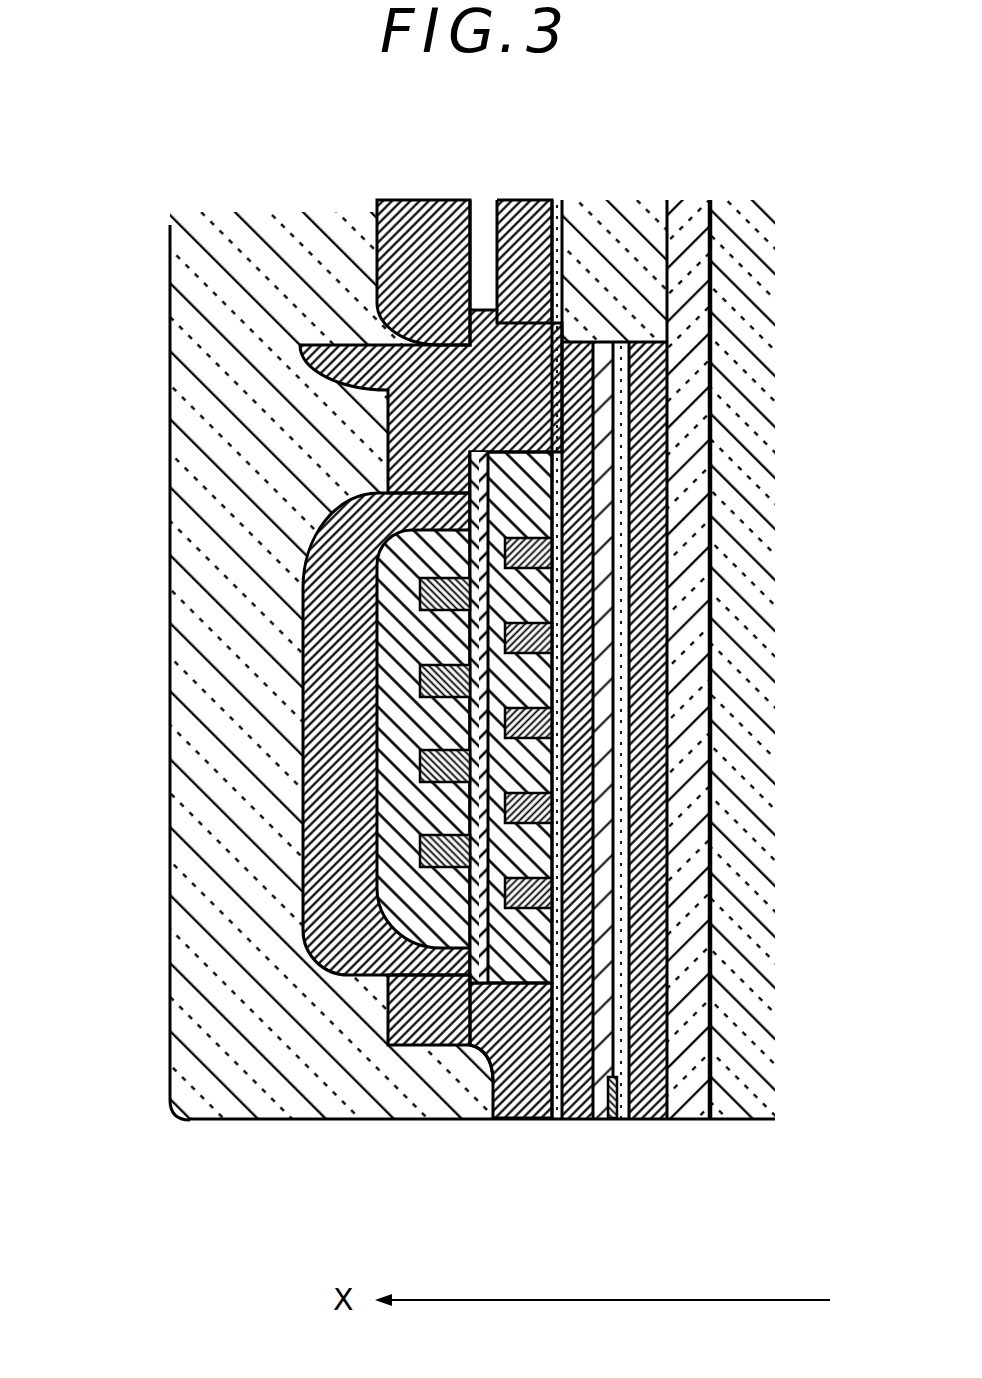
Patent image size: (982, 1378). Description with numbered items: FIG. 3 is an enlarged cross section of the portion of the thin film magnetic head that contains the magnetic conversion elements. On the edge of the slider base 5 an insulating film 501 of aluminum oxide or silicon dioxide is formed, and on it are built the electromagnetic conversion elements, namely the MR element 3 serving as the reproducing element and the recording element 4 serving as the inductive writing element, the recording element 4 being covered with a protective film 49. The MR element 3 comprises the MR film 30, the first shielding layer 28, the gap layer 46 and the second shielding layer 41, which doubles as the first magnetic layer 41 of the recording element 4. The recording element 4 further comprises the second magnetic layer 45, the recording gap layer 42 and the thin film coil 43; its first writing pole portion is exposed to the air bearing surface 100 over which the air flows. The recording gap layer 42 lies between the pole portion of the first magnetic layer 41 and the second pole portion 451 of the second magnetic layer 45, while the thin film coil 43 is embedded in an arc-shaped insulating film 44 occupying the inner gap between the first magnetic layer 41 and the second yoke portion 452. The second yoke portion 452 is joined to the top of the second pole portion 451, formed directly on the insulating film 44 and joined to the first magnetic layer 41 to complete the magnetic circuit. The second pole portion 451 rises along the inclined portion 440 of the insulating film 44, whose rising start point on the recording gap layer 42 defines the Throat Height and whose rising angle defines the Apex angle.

The MR element 3 is at (624, 1133).
The recording element 4 is at (375, 1075).
The slider base 5 is at (725, 250).
The first shielding layer 28 is at (706, 393).
The MR film 30 is at (712, 1090).
The first magnetic layer 41 is at (595, 822).
The recording gap layer 42 is at (595, 766).
The thin film coil 43 is at (553, 728).
The insulating film 44 is at (555, 677).
The second magnetic layer 45 is at (285, 839).
The gap layer 46 is at (593, 923).
The protective film 49 is at (245, 968).
The air bearing surface 100 is at (683, 1120).
The inclined portion 440 is at (468, 1052).
The second pole portion 451 is at (529, 1122).
The second yoke portion 452 is at (345, 630).
The insulating film 501 is at (712, 534).